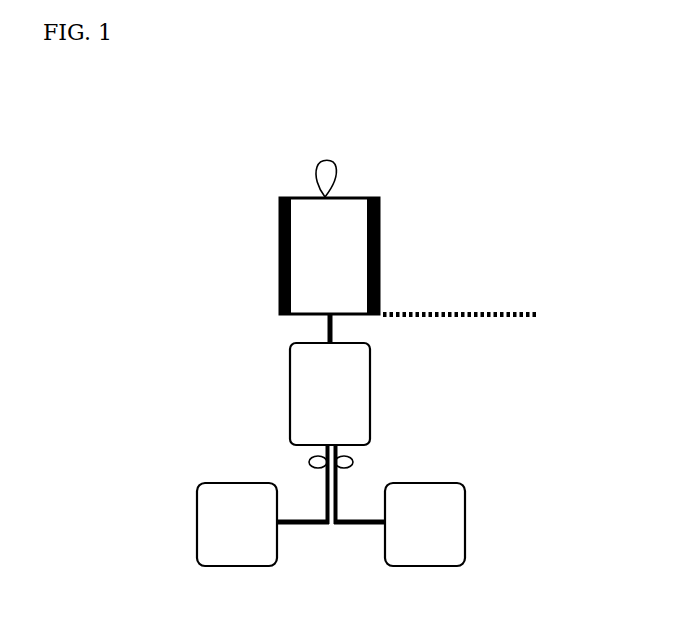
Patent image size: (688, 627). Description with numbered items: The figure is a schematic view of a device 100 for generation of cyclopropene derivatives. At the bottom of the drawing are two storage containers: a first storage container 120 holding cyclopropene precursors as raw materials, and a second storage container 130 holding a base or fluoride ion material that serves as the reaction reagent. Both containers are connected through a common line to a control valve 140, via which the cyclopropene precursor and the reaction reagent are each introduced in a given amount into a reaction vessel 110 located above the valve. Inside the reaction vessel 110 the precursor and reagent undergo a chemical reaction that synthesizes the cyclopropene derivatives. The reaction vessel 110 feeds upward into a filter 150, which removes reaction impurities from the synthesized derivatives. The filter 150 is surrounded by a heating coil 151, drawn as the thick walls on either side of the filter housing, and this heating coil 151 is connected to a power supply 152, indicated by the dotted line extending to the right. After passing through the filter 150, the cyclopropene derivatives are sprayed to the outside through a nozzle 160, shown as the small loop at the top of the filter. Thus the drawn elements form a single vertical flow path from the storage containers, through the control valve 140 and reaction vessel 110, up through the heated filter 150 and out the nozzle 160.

The device for generation of cyclopropene derivatives 100 is at (86, 131).
The reaction vessel 110 is at (370, 388).
The first storage container 120 is at (197, 522).
The second storage container 130 is at (465, 511).
The control valve 140 is at (352, 458).
The filter 150 is at (380, 245).
The heating coil 151 is at (276, 267).
The power supply 152 is at (468, 311).
The nozzle 160 is at (337, 173).